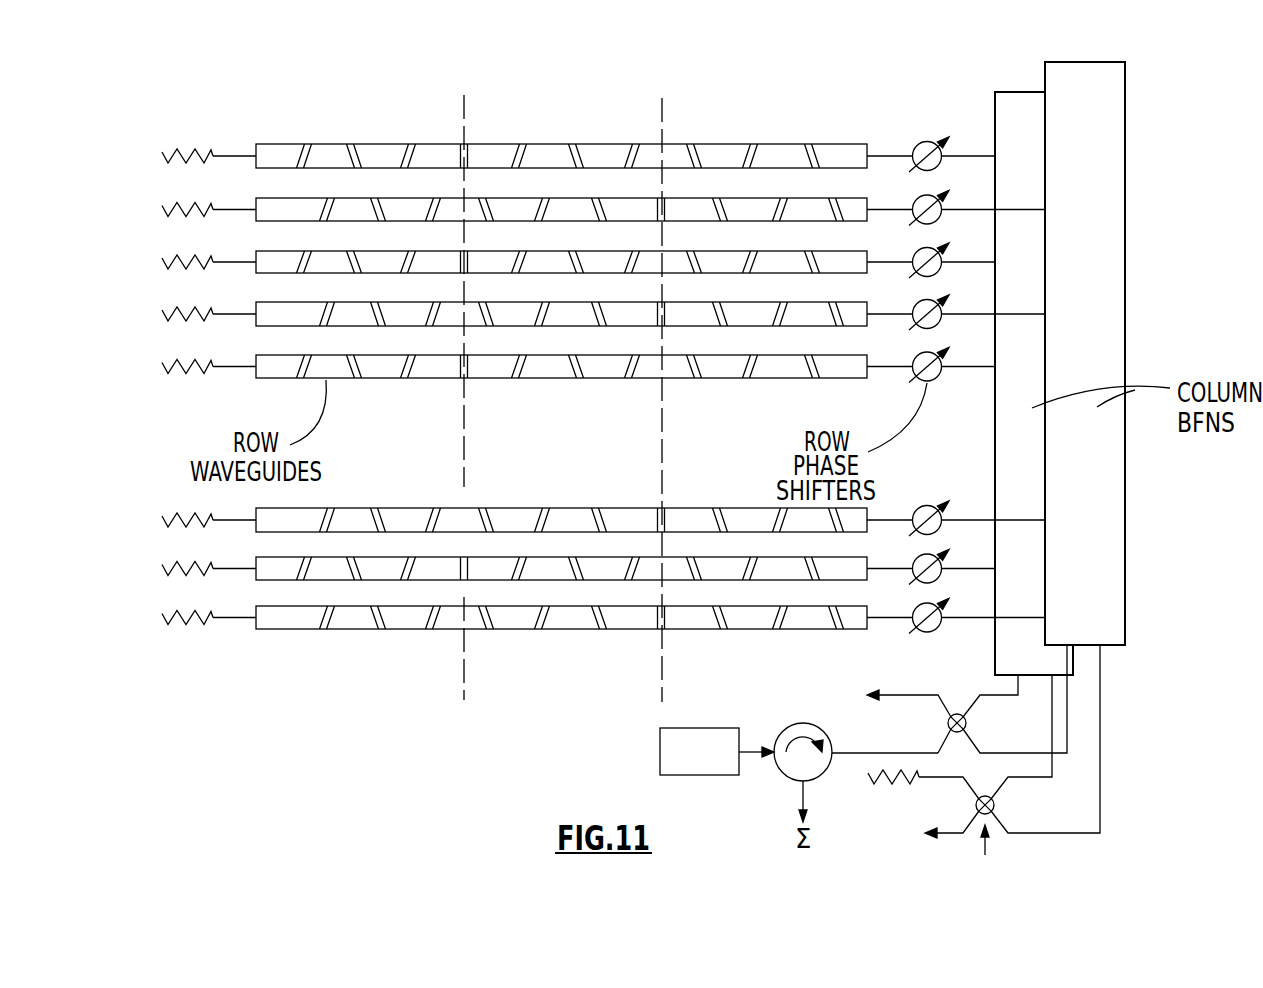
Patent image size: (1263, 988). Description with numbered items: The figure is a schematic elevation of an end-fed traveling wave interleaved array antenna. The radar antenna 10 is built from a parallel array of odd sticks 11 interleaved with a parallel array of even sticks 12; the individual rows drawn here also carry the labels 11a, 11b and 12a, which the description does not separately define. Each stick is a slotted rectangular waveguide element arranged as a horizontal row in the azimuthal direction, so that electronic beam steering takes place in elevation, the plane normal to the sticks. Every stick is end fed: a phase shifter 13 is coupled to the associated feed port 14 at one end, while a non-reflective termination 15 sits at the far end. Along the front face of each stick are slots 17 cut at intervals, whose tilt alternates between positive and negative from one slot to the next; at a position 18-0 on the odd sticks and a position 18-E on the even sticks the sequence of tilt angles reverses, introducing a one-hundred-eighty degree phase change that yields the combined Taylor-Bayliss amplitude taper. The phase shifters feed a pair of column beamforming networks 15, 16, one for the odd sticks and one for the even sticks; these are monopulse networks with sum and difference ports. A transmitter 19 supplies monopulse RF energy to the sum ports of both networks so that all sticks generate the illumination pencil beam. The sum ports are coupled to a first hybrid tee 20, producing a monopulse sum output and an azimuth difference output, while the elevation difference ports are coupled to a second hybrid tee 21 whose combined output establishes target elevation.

The radar antenna 10 is at (374, 716).
The odd sticks 11 is at (818, 198).
The row waveguide 11a is at (565, 631).
The row waveguide 11b is at (598, 509).
The even sticks 12 is at (676, 144).
The waveguide wall 12a is at (722, 379).
The phase shifters 13 is at (915, 145).
The feed ports 14 is at (867, 380).
The non-reflective terminations / first column beamforming network 15 is at (190, 149).
The second column beamforming network 16 is at (1030, 92).
The slots 17 is at (307, 155).
The position for the even sticks 18-E is at (466, 112).
The position for the odd sticks 18-0 is at (667, 198).
The transmitter 19 is at (697, 728).
The first hybrid tee 20 is at (957, 713).
The second hybrid tee 21 is at (996, 832).